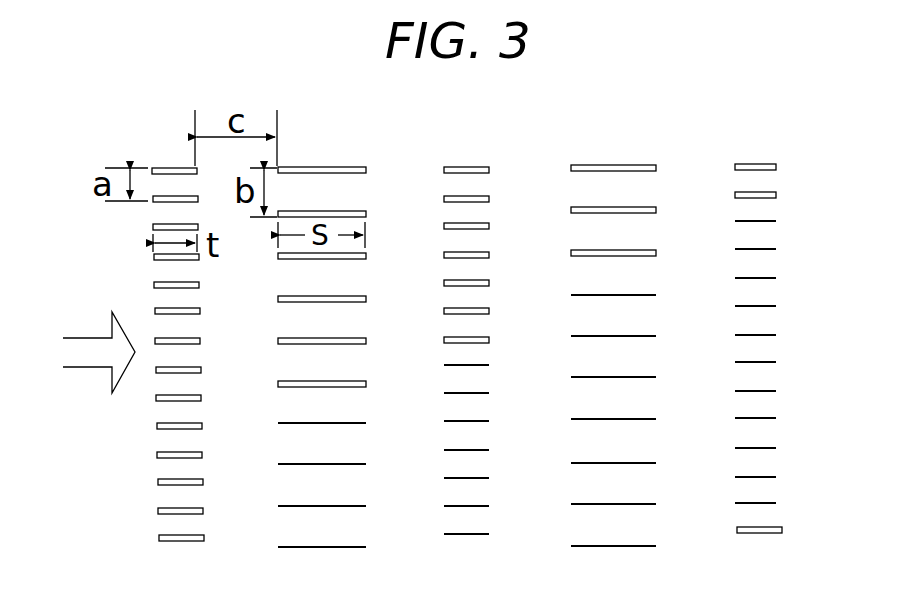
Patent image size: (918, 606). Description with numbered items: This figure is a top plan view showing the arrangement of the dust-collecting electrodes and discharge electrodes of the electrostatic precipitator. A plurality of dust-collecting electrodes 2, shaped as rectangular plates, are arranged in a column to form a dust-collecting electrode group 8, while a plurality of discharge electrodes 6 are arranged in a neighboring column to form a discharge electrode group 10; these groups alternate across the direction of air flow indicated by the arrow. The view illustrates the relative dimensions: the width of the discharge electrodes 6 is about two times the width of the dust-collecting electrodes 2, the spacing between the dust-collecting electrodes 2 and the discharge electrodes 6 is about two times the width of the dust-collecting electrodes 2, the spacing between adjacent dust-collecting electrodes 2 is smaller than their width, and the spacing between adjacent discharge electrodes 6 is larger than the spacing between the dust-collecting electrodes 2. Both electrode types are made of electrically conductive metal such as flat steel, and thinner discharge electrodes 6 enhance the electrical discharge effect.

The dust-collecting electrode 2 is at (178, 288).
The discharge electrode 6 is at (338, 300).
The dust-collecting electrode group 8 is at (474, 160).
The discharge electrode group 10 is at (349, 161).